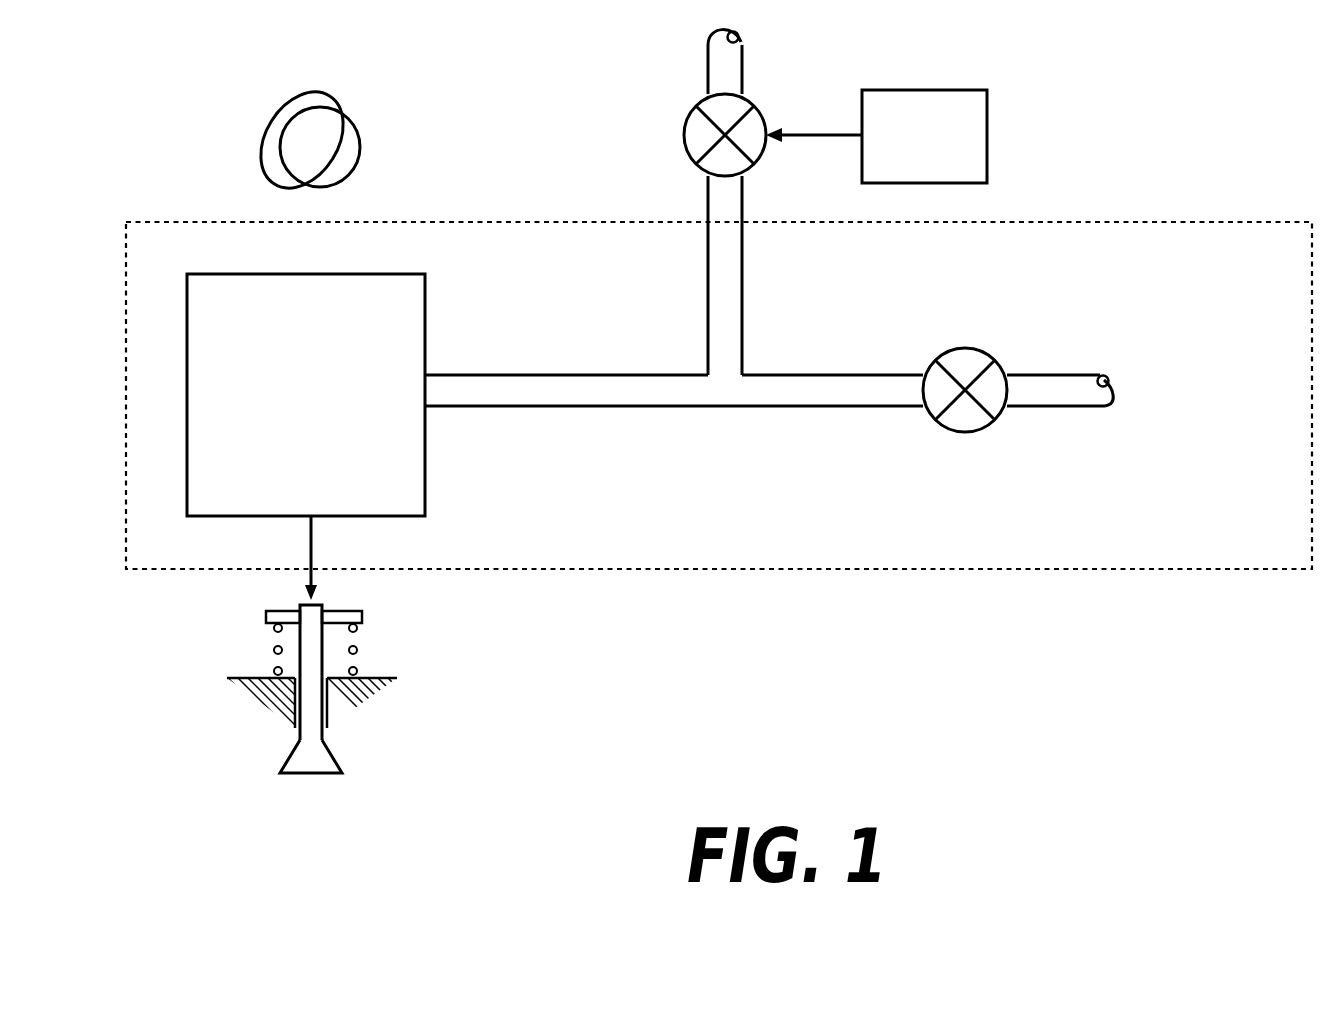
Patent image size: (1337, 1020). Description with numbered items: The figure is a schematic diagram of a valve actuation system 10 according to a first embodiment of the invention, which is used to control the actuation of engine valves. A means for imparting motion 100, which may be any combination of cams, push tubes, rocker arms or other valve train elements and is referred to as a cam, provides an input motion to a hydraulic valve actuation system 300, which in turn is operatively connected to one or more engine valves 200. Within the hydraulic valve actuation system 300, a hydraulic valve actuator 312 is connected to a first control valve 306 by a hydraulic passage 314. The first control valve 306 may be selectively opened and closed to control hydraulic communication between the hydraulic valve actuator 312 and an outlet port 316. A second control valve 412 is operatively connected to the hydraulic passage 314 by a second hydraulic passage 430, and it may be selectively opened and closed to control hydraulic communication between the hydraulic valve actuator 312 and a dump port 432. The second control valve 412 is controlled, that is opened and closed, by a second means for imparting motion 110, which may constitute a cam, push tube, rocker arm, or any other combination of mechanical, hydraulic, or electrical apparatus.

The valve actuation system 10 is at (469, 114).
The means for imparting motion 100 is at (287, 127).
The second means for imparting motion 110 is at (956, 152).
The engine valve 200 is at (300, 648).
The hydraulic valve actuation system 300 is at (1278, 546).
The first control valve 306 is at (972, 434).
The hydraulic valve actuator 312 is at (336, 413).
The hydraulic passage 314 is at (627, 397).
The outlet port 316 is at (1082, 378).
The second control valve 412 is at (684, 132).
The second hydraulic passage 430 is at (718, 326).
The dump port 432 is at (742, 68).